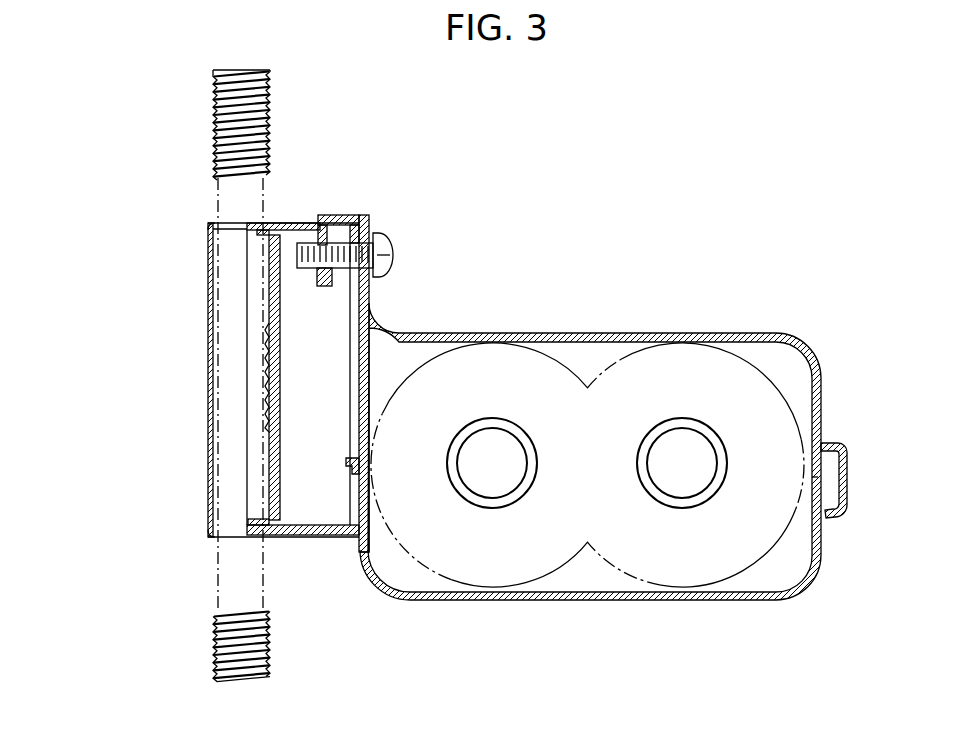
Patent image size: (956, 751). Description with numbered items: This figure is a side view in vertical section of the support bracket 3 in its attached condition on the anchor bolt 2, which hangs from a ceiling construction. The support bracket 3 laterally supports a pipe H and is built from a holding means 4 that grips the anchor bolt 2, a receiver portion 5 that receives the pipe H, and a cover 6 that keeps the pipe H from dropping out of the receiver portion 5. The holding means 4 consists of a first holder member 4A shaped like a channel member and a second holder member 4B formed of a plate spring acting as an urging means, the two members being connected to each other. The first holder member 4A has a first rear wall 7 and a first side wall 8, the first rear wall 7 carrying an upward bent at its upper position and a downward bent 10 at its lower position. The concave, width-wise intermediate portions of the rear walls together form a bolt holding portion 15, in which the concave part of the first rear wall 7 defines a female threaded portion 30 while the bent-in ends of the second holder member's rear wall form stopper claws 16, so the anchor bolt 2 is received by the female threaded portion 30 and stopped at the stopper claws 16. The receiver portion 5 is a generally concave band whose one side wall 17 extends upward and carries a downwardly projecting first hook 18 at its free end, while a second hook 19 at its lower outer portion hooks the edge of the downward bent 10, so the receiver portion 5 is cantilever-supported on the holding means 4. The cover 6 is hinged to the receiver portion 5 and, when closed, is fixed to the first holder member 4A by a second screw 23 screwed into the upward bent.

The anchor bolt 2 is at (271, 86).
The support bracket 3 is at (553, 227).
The holding means 4 is at (190, 322).
The first holder member 4A is at (324, 120).
The second holder member 4B is at (208, 387).
The receiver portion 5 is at (557, 608).
The cover 6 is at (711, 326).
The first rear wall 7 is at (274, 232).
The first side wall 8 is at (287, 240).
The downward bent 10 is at (368, 285).
The bolt holding portion 15 is at (233, 243).
The stopper claws 16 is at (205, 224).
The side wall 17 is at (369, 363).
The first hook 18 is at (322, 288).
The second hook 19 is at (346, 466).
The second screw 23 is at (393, 243).
The female threaded portion 30 is at (267, 400).
The pipe H is at (637, 463).